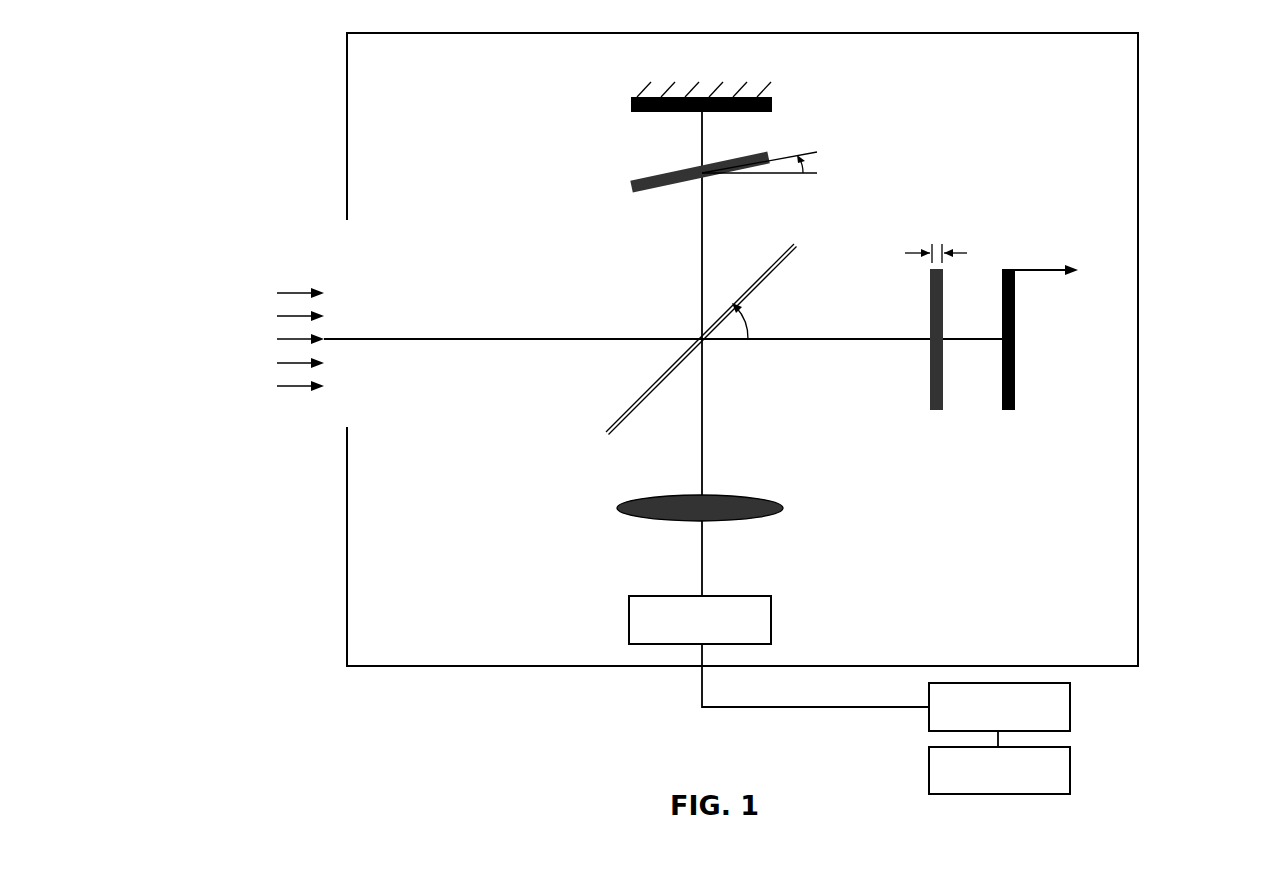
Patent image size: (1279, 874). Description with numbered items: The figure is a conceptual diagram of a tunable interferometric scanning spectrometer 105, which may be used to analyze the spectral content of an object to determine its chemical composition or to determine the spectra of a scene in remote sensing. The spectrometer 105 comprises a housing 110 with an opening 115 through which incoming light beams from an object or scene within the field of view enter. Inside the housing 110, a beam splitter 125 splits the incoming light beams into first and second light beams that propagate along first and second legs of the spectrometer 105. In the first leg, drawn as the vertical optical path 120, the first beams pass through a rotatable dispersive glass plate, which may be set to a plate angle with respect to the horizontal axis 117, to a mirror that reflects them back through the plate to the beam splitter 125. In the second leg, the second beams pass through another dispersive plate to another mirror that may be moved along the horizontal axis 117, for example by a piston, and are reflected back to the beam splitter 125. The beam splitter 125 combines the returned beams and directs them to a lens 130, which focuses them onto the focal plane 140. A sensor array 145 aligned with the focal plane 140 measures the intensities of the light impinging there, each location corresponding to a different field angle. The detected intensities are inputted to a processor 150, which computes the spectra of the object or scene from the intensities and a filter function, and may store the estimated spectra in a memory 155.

The tunable interferometric scanning spectrometer 105 is at (1217, 51).
The housing 110 is at (1140, 332).
The opening 115 is at (333, 216).
The horizontal axis 117 is at (825, 343).
The first optical path 120 is at (700, 250).
The beam splitter 125 is at (612, 414).
The lens 130 is at (762, 494).
The focal plane 140 is at (763, 596).
The sensor array 145 is at (772, 620).
The processor 150 is at (1072, 704).
The memory 155 is at (1072, 768).